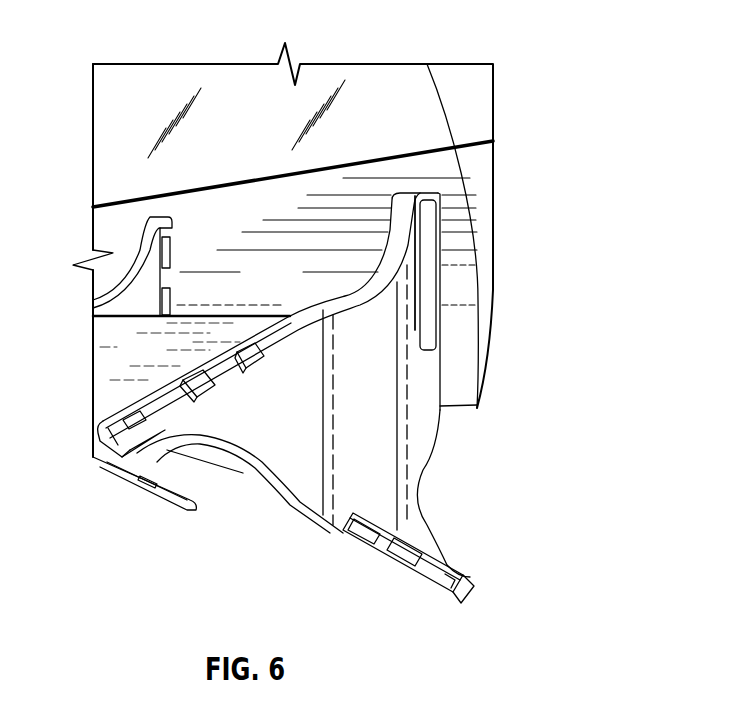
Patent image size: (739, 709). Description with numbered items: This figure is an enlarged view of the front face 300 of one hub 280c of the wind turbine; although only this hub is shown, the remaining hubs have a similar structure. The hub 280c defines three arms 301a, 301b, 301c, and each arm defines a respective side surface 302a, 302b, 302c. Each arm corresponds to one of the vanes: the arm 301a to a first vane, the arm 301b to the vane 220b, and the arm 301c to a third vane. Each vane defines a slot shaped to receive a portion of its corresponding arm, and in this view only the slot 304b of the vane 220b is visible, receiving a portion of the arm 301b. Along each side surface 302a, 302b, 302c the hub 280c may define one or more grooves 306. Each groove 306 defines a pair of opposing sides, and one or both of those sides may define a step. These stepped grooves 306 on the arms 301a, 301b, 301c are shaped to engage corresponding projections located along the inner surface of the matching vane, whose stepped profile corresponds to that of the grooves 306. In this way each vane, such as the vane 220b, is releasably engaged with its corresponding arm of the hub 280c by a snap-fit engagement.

The vane 220b is at (487, 228).
The front face 300 is at (408, 452).
The arm 301a is at (211, 446).
The arm 301b is at (432, 192).
The arm 301c is at (471, 585).
The side surface 302a is at (290, 320).
The side surface 302b is at (478, 406).
The side surface 302c is at (342, 535).
The slot 304b is at (441, 306).
The groove 306 is at (218, 346).
The hub 280c is at (514, 442).